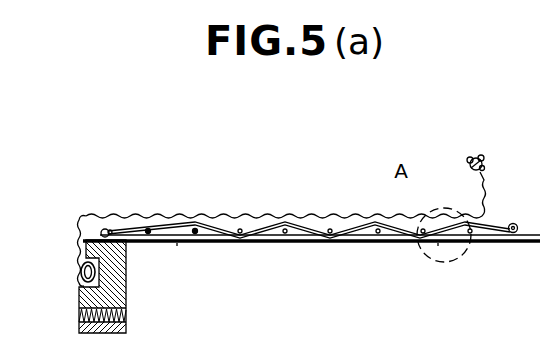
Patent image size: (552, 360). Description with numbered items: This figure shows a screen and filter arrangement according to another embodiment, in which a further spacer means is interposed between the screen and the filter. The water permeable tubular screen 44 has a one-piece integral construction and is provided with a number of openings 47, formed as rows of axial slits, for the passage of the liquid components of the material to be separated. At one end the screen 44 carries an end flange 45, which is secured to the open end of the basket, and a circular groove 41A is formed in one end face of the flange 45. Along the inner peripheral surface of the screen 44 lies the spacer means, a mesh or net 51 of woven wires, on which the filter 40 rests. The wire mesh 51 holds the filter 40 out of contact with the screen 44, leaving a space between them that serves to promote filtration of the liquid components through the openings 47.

The filter 40 is at (299, 226).
The circular groove 41A is at (81, 276).
The water permeable tubular screen 44 is at (250, 244).
The end flange 45 is at (81, 296).
The openings 47 is at (177, 244).
The wire mesh 51 is at (212, 228).